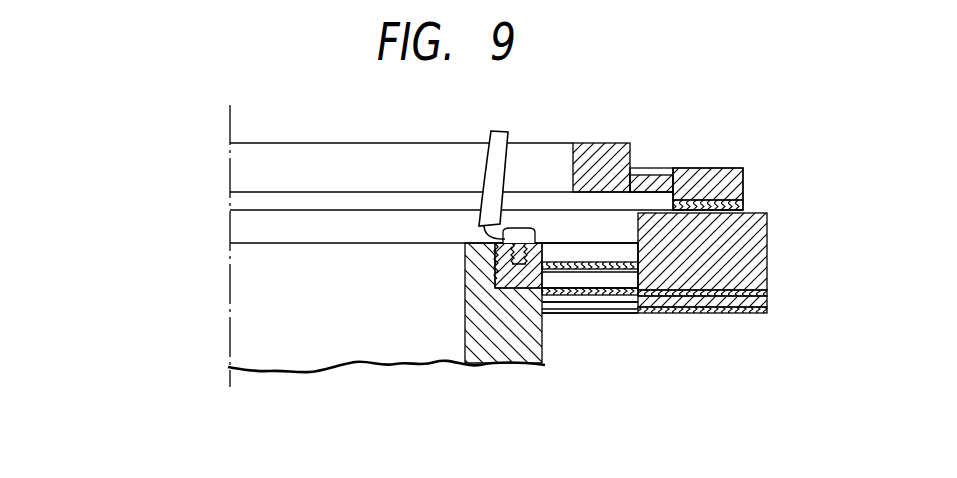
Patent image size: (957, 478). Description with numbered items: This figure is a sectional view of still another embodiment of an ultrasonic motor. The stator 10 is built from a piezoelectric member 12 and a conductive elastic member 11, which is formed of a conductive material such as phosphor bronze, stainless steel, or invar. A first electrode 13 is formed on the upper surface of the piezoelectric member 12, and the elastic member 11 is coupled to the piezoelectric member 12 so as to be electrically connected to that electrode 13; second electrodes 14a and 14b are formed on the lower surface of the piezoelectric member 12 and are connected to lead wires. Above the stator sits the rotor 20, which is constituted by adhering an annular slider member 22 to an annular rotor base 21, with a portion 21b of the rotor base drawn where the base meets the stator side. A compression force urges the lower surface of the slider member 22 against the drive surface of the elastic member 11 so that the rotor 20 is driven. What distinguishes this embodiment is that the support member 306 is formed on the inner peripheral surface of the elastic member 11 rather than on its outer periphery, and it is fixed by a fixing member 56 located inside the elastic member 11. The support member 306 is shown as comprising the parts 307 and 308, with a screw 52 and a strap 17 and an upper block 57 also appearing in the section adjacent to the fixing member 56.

The stator 10 is at (768, 205).
The elastic member 11 is at (752, 253).
The piezoelectric member 12 is at (758, 303).
The first electrode 13 is at (628, 292).
The second electrode 14a is at (615, 308).
The second electrode 14b is at (590, 307).
The strap 17 is at (499, 166).
The rotor 20 is at (800, 105).
The rotor base 21 is at (742, 176).
The clamp tongue 21b is at (653, 182).
The slider member 22 is at (745, 207).
The screw 52 is at (513, 229).
The fixing member 56 is at (488, 336).
The upper block 57 is at (602, 162).
The support member 306 is at (603, 420).
The spacer 307 is at (587, 277).
The threaded insert 308 is at (530, 292).